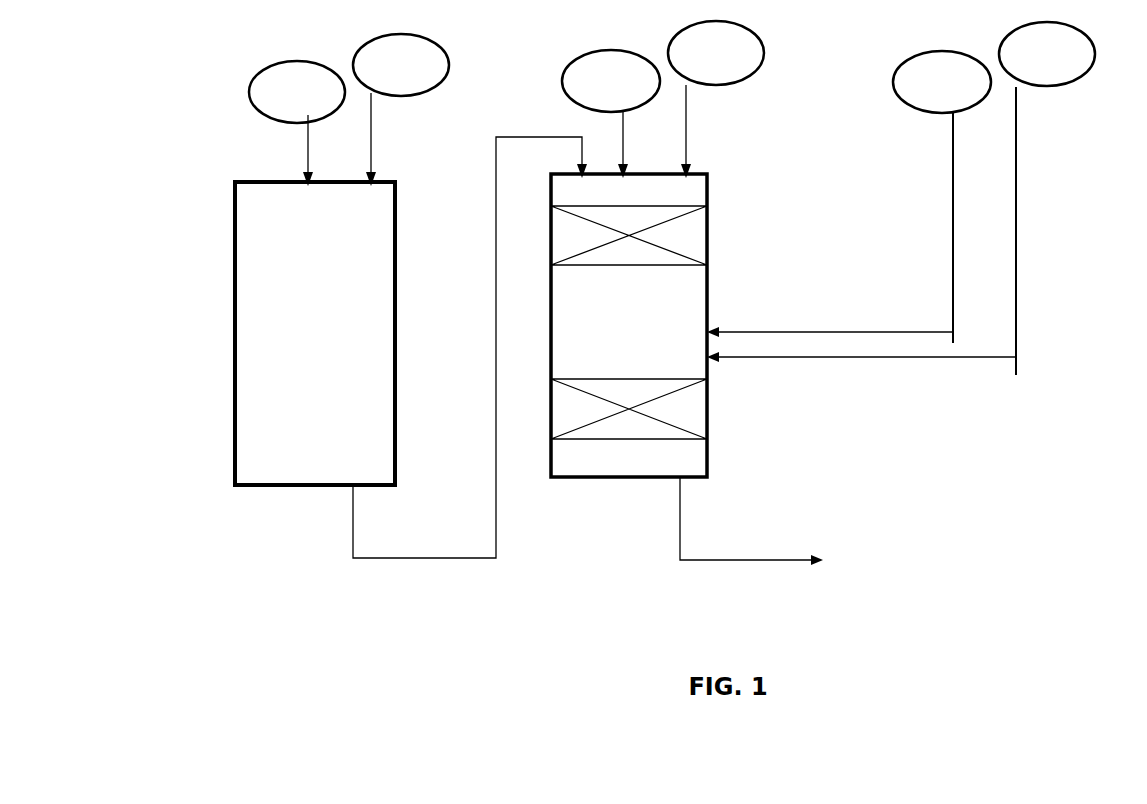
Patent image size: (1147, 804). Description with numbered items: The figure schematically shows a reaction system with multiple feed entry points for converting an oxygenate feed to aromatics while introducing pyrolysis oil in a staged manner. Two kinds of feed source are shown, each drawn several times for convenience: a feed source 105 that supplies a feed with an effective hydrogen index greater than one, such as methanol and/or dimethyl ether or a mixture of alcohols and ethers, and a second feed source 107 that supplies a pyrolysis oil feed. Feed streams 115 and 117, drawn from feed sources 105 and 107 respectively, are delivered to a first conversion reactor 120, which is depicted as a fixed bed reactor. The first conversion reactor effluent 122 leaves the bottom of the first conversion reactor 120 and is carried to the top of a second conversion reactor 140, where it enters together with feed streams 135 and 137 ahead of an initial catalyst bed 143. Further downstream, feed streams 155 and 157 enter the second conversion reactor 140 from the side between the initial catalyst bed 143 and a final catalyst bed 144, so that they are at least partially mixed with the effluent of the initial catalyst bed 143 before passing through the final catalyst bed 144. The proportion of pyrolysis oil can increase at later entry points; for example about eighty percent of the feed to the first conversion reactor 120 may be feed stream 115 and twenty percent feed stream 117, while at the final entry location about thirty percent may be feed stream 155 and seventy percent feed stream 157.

The feed source 105 is at (620, 114).
The second feed source 107 is at (724, 58).
The feed stream 115 is at (295, 152).
The feed stream 117 is at (382, 146).
The first conversion reactor 120 is at (300, 343).
The first conversion reactor effluent 122 is at (455, 576).
The feed stream 135 is at (613, 145).
The feed stream 137 is at (701, 143).
The second conversion reactor 140 is at (613, 337).
The initial catalyst bed 143 is at (725, 241).
The final catalyst bed 144 is at (727, 421).
The feed stream 155 is at (940, 130).
The feed stream 157 is at (1030, 128).